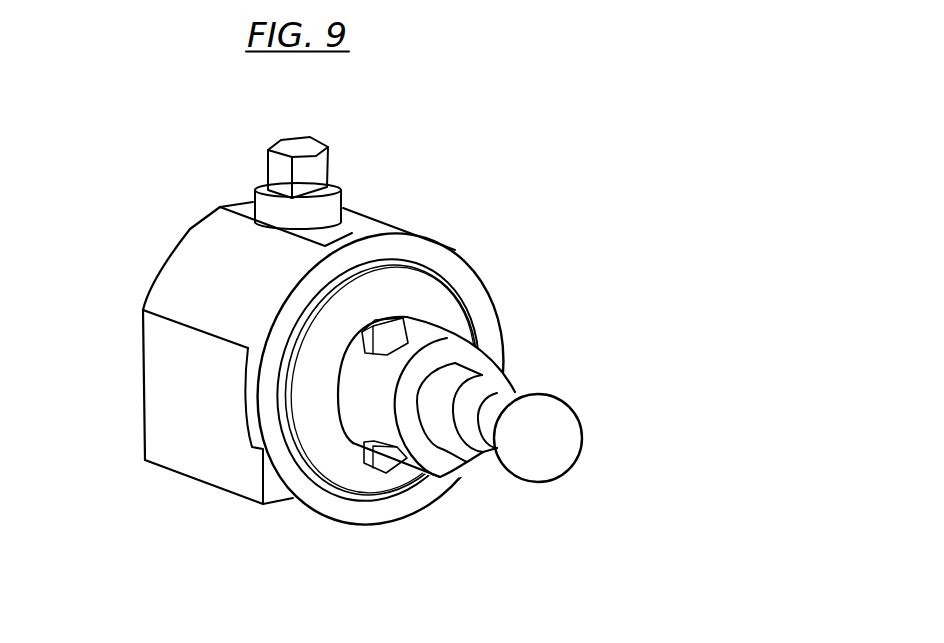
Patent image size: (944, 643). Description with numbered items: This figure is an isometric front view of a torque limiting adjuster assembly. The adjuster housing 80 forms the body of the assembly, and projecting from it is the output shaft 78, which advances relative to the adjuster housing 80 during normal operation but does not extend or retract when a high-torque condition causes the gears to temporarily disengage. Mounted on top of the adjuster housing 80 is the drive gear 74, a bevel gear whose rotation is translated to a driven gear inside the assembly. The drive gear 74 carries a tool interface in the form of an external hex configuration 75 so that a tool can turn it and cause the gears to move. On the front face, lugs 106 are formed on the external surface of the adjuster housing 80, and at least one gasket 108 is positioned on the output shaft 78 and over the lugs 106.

The drive gear 74 is at (347, 194).
The external hex configuration 75 is at (313, 140).
The output shaft 78 is at (440, 423).
The adjuster housing 80 is at (203, 458).
The lugs 106 is at (393, 332).
The gasket 108 is at (405, 285).